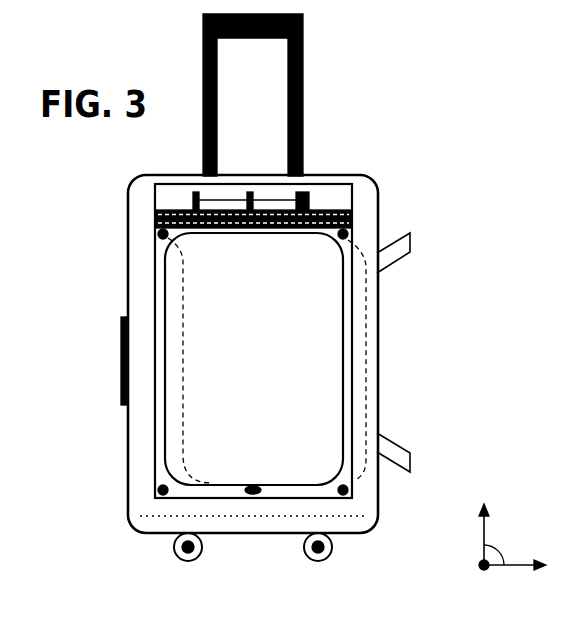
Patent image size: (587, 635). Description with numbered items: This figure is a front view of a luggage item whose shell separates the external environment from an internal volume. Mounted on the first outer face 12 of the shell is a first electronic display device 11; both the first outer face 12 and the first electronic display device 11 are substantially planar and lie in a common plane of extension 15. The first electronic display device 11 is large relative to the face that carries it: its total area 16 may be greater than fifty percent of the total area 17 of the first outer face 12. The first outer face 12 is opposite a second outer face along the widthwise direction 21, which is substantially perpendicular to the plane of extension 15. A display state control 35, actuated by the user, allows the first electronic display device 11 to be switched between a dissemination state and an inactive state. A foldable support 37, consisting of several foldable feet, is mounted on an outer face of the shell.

The first electronic display device 11 is at (325, 398).
The first outer face 12 is at (300, 338).
The plane of extension 15 is at (497, 553).
The total area of the first display device 16 is at (200, 437).
The total area of the first outer face 17 is at (160, 505).
The widthwise direction 21 is at (476, 568).
The display state control 35 is at (259, 493).
The foldable support 37 is at (410, 243).